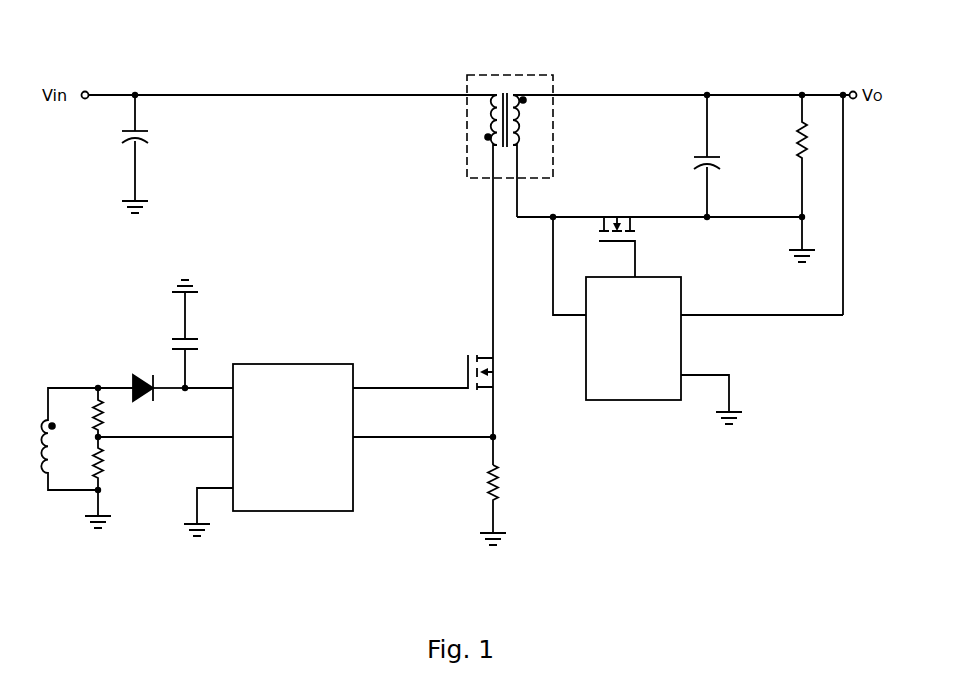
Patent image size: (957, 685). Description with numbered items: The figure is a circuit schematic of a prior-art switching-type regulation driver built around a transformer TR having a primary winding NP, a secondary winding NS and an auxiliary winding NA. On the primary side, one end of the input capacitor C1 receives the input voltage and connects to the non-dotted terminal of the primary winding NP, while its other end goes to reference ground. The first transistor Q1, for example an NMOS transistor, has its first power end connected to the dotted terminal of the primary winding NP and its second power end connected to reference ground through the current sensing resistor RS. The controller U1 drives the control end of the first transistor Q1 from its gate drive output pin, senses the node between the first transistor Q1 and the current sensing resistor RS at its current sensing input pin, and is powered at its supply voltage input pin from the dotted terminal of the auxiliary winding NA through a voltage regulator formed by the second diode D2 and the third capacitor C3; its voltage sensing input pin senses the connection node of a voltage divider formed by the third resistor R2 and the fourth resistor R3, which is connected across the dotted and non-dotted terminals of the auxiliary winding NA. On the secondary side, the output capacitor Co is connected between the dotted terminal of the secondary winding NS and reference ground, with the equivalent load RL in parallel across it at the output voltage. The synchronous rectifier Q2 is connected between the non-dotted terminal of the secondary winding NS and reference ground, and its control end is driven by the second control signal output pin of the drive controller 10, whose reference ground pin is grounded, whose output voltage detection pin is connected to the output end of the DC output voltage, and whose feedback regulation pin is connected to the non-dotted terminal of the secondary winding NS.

The drive controller 10 is at (629, 390).
The input capacitor C1 is at (149, 154).
The transformer TR is at (501, 87).
The primary winding NP is at (484, 147).
The secondary winding NS is at (528, 156).
The auxiliary winding NA is at (69, 439).
The output capacitor Co is at (720, 156).
The equivalent load RL is at (813, 178).
The first transistor Q1 is at (437, 372).
The synchronous rectifier Q2 is at (617, 233).
The controller U1 is at (293, 455).
The second diode D2 is at (141, 379).
The third resistor R2 is at (111, 412).
The fourth resistor R3 is at (107, 482).
The third capacitor C3 is at (200, 334).
The current sensing resistor RS is at (486, 505).